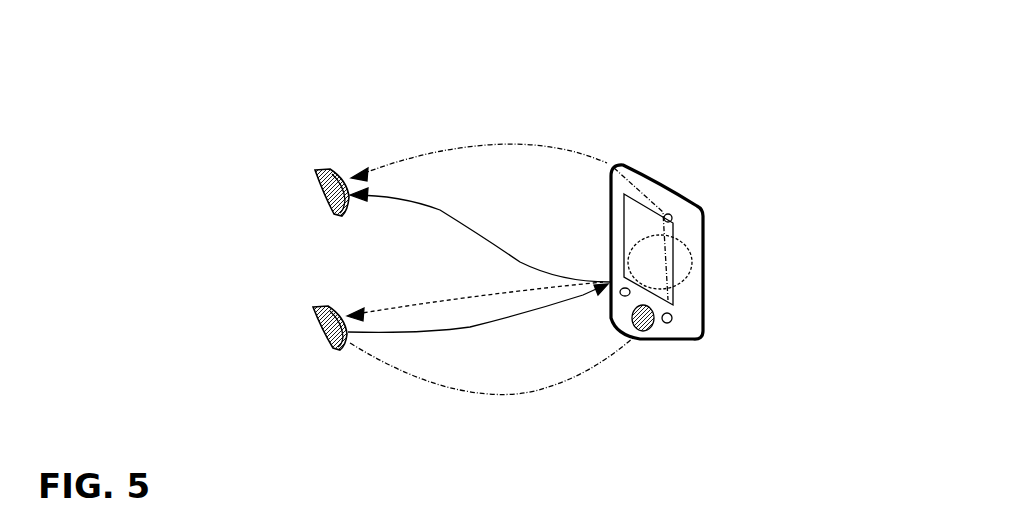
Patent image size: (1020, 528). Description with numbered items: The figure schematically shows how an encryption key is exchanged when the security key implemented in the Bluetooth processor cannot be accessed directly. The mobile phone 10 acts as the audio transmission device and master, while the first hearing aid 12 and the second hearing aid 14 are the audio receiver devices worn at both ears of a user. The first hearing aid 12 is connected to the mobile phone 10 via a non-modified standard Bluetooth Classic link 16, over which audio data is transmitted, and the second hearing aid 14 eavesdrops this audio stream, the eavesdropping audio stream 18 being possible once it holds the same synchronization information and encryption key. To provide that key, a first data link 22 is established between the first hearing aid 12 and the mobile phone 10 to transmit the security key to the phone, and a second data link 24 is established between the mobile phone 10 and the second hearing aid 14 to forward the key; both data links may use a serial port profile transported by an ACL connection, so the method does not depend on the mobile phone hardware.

The mobile phone 10 is at (706, 227).
The first hearing aid 12 is at (325, 328).
The second hearing aid 14 is at (326, 192).
The Bluetooth Classic link 16 is at (444, 309).
The eavesdropping audio stream 18 is at (492, 250).
The first data link 22 is at (587, 375).
The second data link 24 is at (547, 142).